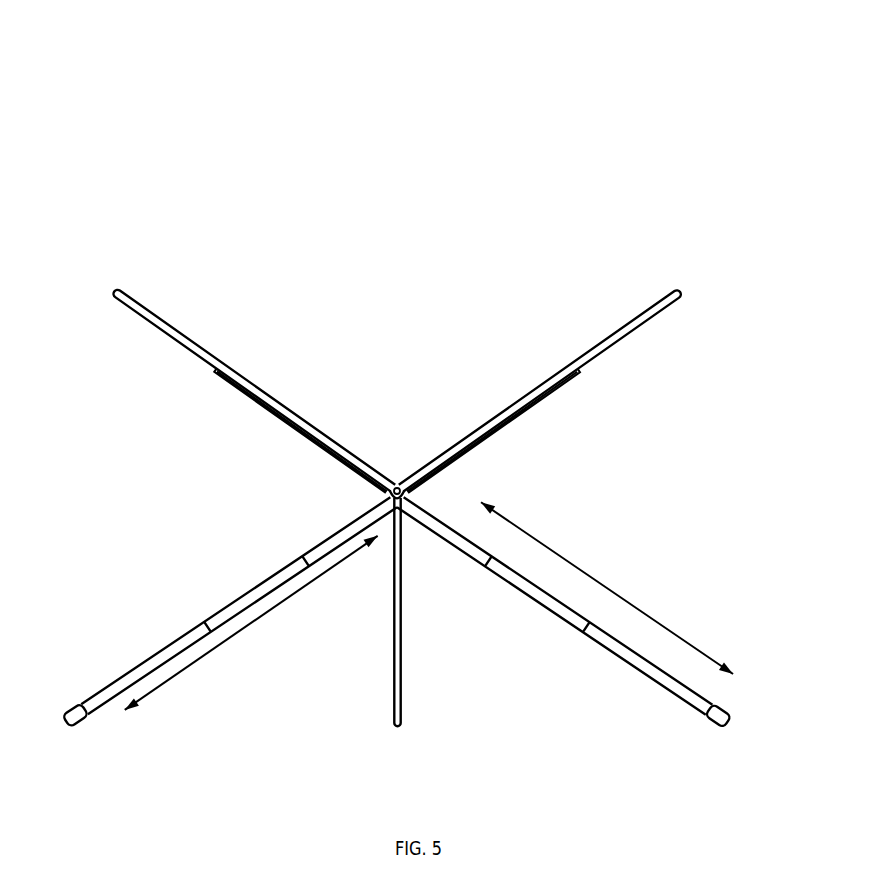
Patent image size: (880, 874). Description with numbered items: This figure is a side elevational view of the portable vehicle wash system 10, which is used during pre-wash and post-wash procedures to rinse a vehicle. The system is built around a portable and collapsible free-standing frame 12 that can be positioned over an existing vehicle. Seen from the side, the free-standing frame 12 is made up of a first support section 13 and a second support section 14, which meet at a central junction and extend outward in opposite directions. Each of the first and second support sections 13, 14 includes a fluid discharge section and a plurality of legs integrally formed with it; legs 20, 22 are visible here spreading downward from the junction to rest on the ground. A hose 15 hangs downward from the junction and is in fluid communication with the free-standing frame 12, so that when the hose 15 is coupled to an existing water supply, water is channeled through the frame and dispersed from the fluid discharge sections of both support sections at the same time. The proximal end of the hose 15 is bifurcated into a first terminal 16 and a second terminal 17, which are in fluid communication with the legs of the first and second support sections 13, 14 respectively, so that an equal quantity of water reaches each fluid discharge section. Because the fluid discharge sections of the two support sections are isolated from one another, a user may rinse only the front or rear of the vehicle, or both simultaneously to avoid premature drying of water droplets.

The portable vehicle wash system 10 is at (563, 150).
The free-standing frame 12 is at (403, 375).
The first support section 13 is at (136, 312).
The second support section 14 is at (665, 306).
The hose 15 is at (398, 700).
The first terminal 16 is at (281, 418).
The second terminal 17 is at (505, 424).
The leg 20 is at (325, 540).
The leg 22 is at (462, 540).